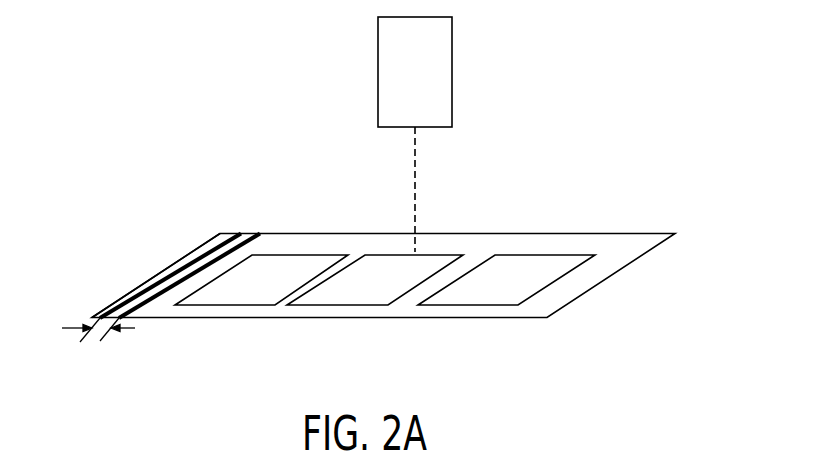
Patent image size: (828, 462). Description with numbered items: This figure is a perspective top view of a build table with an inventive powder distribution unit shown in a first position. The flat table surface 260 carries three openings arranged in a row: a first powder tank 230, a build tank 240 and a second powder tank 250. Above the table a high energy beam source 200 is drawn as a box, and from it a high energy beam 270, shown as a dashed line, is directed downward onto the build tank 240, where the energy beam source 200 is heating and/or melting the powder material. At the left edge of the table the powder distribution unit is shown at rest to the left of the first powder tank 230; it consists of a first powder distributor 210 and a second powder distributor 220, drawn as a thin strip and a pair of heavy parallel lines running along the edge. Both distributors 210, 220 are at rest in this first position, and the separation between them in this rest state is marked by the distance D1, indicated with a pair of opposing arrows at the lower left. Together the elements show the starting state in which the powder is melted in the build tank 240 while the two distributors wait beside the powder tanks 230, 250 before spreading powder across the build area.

The high energy beam source 200 is at (429, 86).
The first powder distributor 210 is at (213, 248).
The second powder distributor 220 is at (248, 233).
The first powder tank 230 is at (265, 297).
The build tank 240 is at (380, 297).
The second powder tank 250 is at (510, 297).
The substrate 260 is at (603, 243).
The high energy beam 270 is at (412, 190).
The distance D1 is at (93, 338).